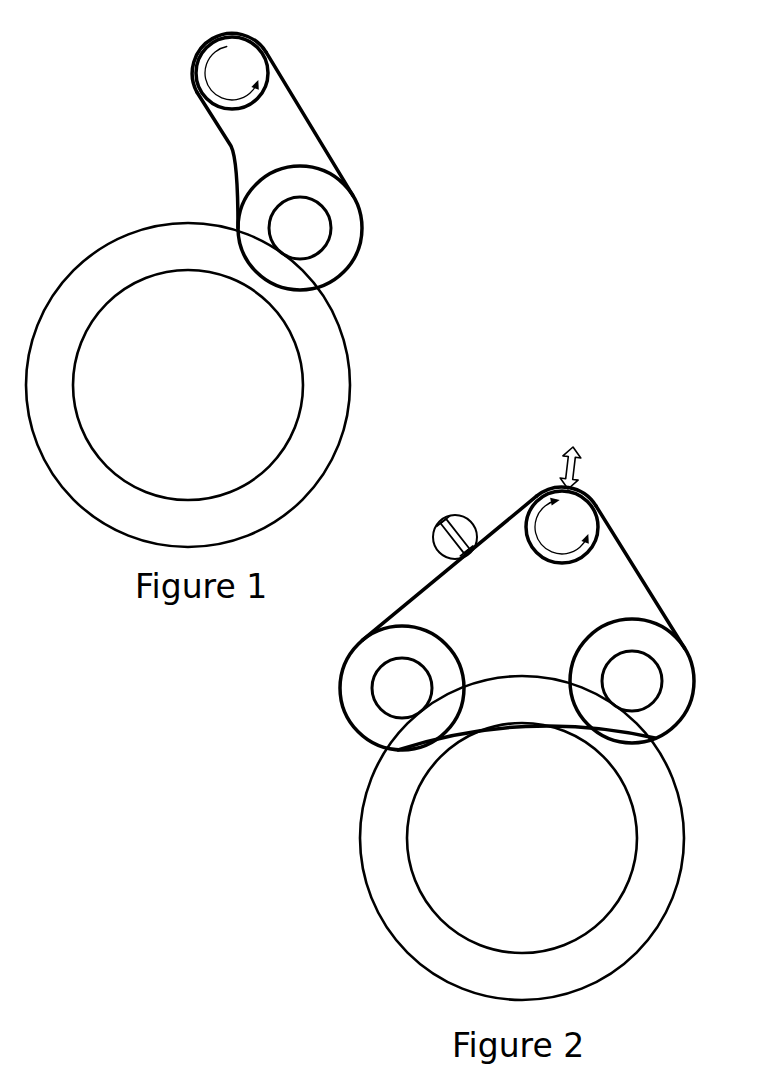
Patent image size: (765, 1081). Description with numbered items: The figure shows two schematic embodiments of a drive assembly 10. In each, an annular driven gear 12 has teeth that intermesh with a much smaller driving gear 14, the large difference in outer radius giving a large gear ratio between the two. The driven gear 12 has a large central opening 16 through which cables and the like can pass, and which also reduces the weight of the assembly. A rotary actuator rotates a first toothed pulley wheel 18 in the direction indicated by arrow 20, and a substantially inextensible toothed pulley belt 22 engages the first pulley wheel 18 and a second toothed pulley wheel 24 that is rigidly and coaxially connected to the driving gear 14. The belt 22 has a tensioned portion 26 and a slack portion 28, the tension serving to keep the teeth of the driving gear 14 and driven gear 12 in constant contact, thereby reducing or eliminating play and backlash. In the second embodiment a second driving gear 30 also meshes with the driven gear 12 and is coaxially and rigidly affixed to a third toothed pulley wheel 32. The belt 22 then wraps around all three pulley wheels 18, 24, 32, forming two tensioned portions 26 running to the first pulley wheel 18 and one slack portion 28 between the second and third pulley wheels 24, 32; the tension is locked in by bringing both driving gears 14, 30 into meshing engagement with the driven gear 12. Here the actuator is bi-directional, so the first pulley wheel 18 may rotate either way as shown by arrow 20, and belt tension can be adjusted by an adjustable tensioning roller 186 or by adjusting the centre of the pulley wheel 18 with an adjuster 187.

In FIG. 1, the drive assembly 10 is at (368, 87).
In FIG. 2, the drive assembly 10 is at (500, 462).
In FIG. 1, the annular driven gear 12 is at (347, 354).
In FIG. 2, the annular driven gear 12 is at (684, 833).
In FIG. 1, the driving gear 14 is at (328, 217).
In FIG. 2, the driving gear 14 is at (660, 665).
In FIG. 1, the central opening 16 is at (173, 402).
In FIG. 2, the central opening 16 is at (525, 860).
In FIG. 1, the first toothed pulley wheel 18 is at (250, 57).
In FIG. 2, the first toothed pulley wheel 18 is at (578, 515).
In FIG. 1, the arrow 20 is at (197, 85).
In FIG. 2, the arrow 20 is at (550, 556).
In FIG. 1, the toothed pulley belt 22 is at (300, 103).
In FIG. 2, the toothed pulley belt 22 is at (630, 552).
In FIG. 1, the second toothed pulley wheel 24 is at (347, 250).
In FIG. 2, the second toothed pulley wheel 24 is at (680, 704).
In FIG. 1, the tensioned portion 26 is at (318, 138).
In FIG. 2, the tensioned portion 26 is at (652, 583).
In FIG. 1, the slack portion 28 is at (230, 172).
In FIG. 2, the slack portion 28 is at (540, 734).
In FIG. 2, the second driving gear 30 is at (377, 705).
In FIG. 2, the third toothed pulley wheel 32 is at (350, 682).
In FIG. 2, the tensioning roller 186 is at (433, 522).
In FIG. 2, the pulley wheel adjuster 187 is at (573, 447).